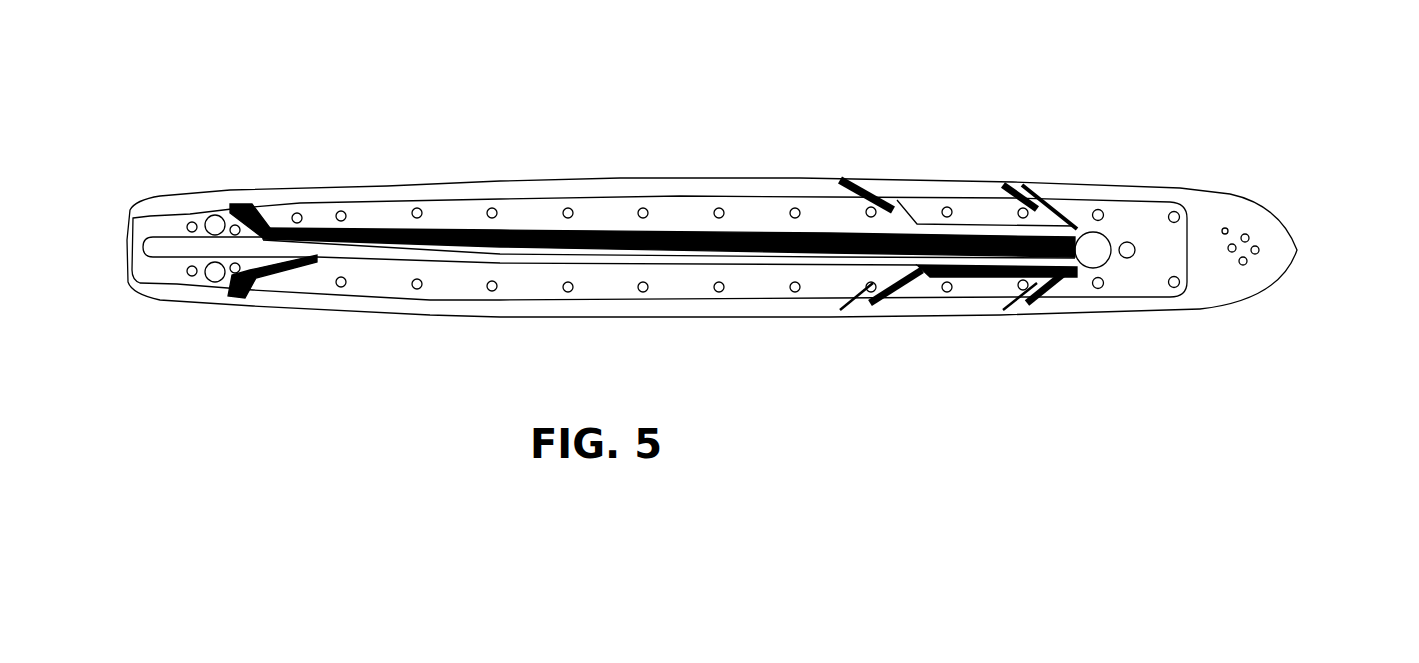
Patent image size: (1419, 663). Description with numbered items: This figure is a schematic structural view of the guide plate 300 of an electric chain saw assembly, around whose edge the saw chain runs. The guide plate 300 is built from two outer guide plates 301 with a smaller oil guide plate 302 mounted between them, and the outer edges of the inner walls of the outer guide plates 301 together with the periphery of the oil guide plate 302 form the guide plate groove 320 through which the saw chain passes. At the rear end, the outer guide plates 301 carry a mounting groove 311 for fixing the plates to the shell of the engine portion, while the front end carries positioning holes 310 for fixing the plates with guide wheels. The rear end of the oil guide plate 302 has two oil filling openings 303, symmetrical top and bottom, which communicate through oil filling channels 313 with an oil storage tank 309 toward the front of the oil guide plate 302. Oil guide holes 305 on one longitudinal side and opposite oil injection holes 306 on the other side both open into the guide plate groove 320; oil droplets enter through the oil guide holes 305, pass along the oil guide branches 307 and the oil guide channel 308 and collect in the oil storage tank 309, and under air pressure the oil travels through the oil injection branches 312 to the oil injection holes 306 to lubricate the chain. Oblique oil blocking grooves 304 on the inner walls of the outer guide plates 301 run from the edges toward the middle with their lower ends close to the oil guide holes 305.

The guide plate 300 is at (170, 113).
The outer guide plate 301 is at (1277, 235).
The oil guide plate 302 is at (1128, 270).
The oil filling hole 303 is at (293, 136).
The oil blocking groove 304 is at (867, 203).
The oil guide hole 305 is at (1045, 212).
The oil injection hole 306 is at (885, 284).
The oil guide branch 307 is at (898, 212).
The oil guide channel 308 is at (968, 222).
The oil storage tank 309 is at (1097, 258).
The positioning hole 310 is at (1247, 233).
The mounting groove 311 is at (168, 250).
The oil injection branch 312 is at (910, 280).
The oil filling channel 313 is at (362, 258).
The guide plate groove 320 is at (390, 200).